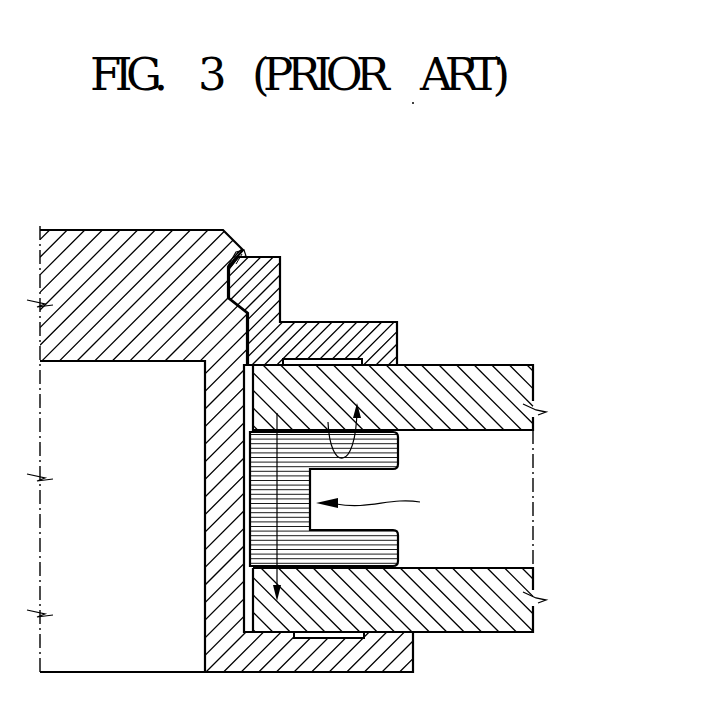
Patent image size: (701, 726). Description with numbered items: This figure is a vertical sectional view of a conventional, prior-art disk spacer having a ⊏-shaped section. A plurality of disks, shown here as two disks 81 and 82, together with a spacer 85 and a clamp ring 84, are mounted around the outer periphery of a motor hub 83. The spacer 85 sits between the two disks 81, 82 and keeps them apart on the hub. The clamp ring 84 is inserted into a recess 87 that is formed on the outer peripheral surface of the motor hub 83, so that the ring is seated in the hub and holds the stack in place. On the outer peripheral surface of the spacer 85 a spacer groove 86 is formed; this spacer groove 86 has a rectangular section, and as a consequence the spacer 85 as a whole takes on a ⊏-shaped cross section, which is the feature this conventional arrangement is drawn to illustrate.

The disk 81 is at (498, 616).
The disk 82 is at (498, 391).
The motor hub 83 is at (125, 250).
The clamp ring 84 is at (342, 335).
The spacer 85 is at (263, 492).
The spacer groove 86 is at (389, 508).
The recess 87 is at (253, 257).